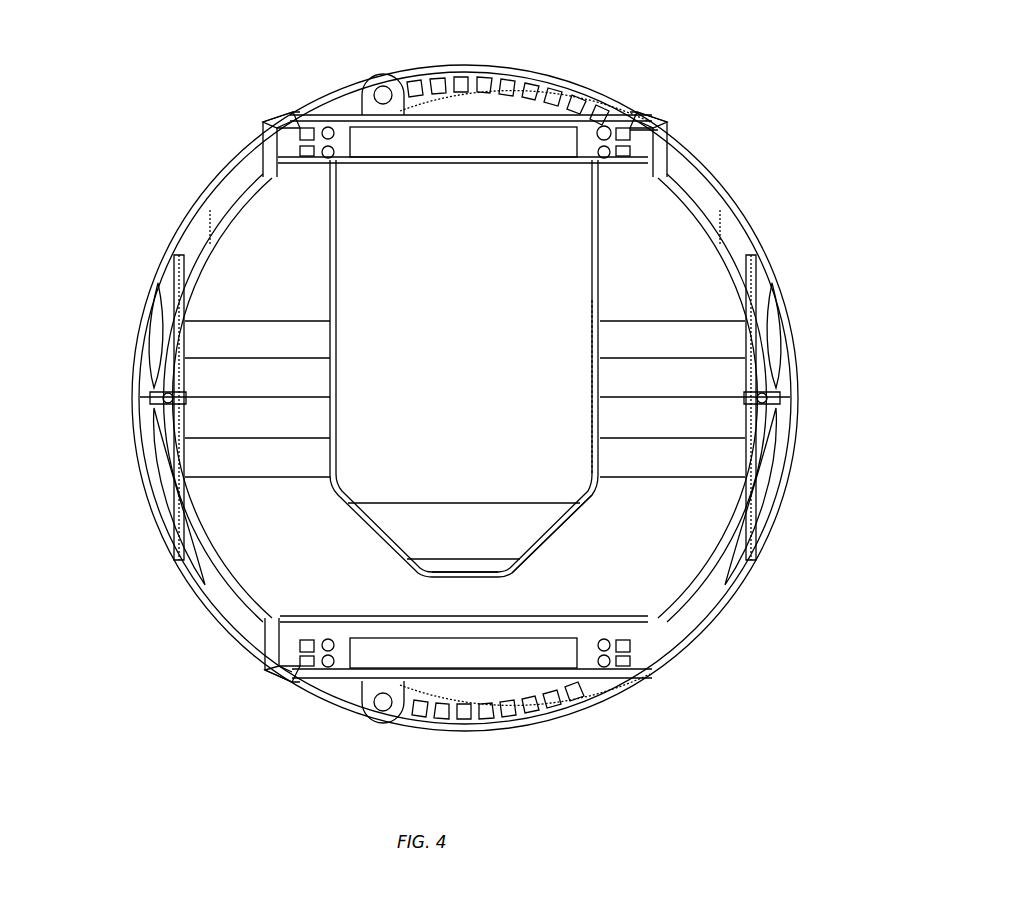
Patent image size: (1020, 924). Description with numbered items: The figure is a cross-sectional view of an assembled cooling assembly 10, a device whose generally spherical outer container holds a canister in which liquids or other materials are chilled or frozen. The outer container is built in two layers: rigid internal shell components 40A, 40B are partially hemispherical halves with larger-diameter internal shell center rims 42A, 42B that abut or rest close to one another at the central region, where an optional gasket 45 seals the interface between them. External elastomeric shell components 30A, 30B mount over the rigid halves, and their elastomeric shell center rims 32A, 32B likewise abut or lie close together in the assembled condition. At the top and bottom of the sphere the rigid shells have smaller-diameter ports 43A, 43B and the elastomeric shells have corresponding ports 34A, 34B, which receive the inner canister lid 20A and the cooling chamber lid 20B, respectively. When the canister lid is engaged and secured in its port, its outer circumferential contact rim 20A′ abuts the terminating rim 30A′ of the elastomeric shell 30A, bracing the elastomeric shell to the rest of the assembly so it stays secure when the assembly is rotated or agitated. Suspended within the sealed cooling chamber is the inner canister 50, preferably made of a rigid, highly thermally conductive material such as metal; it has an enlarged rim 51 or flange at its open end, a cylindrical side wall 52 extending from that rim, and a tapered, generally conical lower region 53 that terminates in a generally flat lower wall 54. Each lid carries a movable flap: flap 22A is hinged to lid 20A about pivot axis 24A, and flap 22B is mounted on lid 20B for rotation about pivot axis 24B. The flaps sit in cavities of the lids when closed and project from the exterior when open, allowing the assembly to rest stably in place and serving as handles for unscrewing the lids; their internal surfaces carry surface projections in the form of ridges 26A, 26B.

The cooling assembly 10 is at (122, 163).
The inner canister lid 20A is at (612, 94).
The outer circumferential contact rim 20A′ is at (656, 130).
The cooling chamber lid 20B is at (436, 726).
The movable flap 22A is at (548, 76).
The movable flap 22B is at (572, 710).
The pivot axis 24A is at (380, 86).
The pivot axis 24B is at (382, 712).
The ridges 26A is at (460, 78).
The ridges 26B is at (484, 718).
The external elastomeric shell component 30A is at (758, 208).
The terminating rim 30A′ is at (665, 128).
The external elastomeric shell component 30B is at (766, 578).
The elastomeric shell center rim 32A is at (162, 395).
The elastomeric shell center rim 32B is at (162, 400).
The port 34A is at (275, 172).
The port 34B is at (262, 632).
The rigid internal shell component 40A is at (753, 347).
The rigid internal shell component 40B is at (680, 598).
The internal shell center rim 42A is at (152, 362).
The internal shell center rim 42B is at (152, 430).
The port 43A is at (272, 145).
The port 43B is at (276, 652).
The gasket 45 is at (768, 398).
The inner canister 50 is at (352, 282).
The enlarged rim 51 is at (612, 151).
The cylindrical side wall 52 is at (592, 412).
The tapered conical lower region 53 is at (542, 548).
The flat lower wall 54 is at (442, 575).